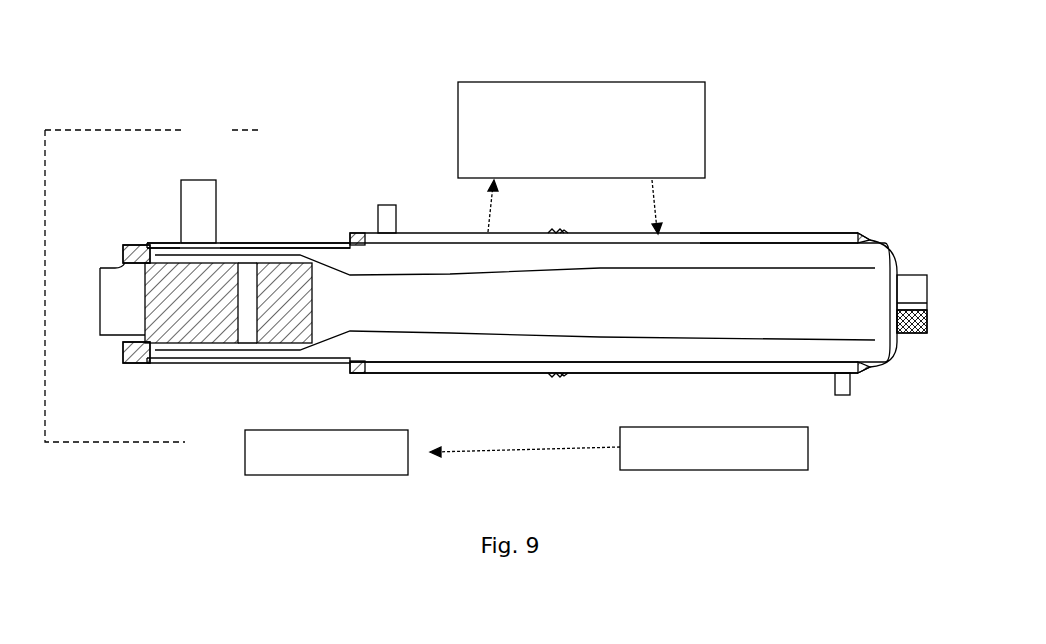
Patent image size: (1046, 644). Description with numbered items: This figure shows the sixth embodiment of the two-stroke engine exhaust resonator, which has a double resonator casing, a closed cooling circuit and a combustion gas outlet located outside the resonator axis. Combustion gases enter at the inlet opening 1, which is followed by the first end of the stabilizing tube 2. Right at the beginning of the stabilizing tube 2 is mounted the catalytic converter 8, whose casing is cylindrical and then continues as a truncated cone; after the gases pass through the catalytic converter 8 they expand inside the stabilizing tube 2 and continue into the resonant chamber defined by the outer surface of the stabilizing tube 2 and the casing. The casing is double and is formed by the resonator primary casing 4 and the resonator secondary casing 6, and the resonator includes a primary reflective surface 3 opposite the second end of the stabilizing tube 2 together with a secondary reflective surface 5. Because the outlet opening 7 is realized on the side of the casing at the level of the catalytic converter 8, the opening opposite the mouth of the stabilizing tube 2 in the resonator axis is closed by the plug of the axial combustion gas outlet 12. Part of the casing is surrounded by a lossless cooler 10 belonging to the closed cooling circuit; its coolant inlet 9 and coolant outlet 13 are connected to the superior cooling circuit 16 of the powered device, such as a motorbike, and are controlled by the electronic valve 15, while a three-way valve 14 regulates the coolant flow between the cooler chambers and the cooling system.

The inlet opening 1 is at (100, 335).
The stabilizing tube 2 is at (665, 351).
The primary reflective surface 3 is at (899, 352).
The resonator primary casing 4 is at (733, 240).
The secondary reflective surface 5 is at (149, 243).
The resonator secondary casing 6 is at (264, 240).
The outlet opening 7 is at (207, 178).
The catalytic converter 8 is at (213, 334).
The coolant inlet 9 is at (388, 194).
The cooler 10 is at (454, 374).
The plug of the axial combustion gas outlet 12 is at (912, 296).
The coolant outlet 13 is at (581, 34).
The three-way valve 14 is at (581, 158).
The electronic valve 15 is at (619, 448).
The superior cooling circuit 16 is at (326, 452).